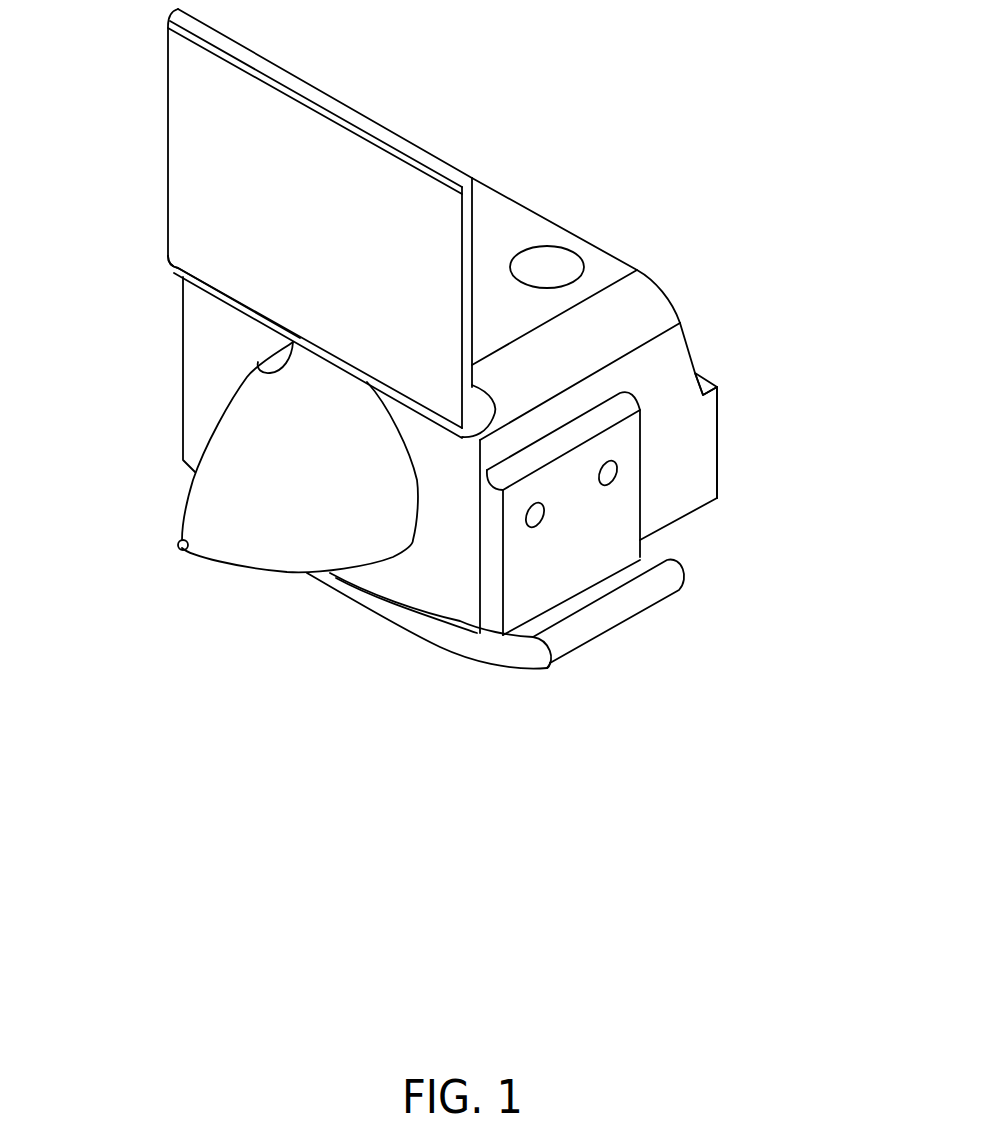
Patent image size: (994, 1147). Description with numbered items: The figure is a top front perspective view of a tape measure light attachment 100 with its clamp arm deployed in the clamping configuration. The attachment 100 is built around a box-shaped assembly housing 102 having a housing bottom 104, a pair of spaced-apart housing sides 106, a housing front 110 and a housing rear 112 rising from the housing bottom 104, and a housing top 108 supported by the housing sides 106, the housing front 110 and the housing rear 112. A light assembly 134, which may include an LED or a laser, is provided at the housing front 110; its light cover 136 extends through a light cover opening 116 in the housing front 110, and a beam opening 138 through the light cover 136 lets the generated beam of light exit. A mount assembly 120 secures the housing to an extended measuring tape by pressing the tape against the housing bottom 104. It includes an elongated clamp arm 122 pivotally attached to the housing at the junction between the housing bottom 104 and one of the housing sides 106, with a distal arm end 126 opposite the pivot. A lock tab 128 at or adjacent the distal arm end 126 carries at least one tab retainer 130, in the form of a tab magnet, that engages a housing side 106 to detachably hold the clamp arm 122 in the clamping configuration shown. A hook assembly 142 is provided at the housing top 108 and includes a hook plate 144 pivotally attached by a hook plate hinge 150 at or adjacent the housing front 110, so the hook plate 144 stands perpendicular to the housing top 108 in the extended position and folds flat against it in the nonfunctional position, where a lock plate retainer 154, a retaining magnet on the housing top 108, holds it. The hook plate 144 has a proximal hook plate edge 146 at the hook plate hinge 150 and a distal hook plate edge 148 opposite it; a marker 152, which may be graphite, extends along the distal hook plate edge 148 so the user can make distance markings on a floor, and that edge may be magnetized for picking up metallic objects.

The tape measure light attachment 100 is at (489, 64).
The assembly housing 102 is at (710, 518).
The housing bottom 104 is at (678, 525).
The housing sides 106 is at (183, 392).
The housing top 108 is at (506, 226).
The housing front 110 is at (204, 423).
The housing rear 112 is at (718, 411).
The light cover opening 116 is at (285, 368).
The mount assembly 120 is at (560, 688).
The clamp arm 122 is at (507, 660).
The distal arm end 126 is at (617, 610).
The lock tab 128 is at (490, 588).
The tab retainer 130 is at (609, 486).
The light assembly 134 is at (287, 590).
The light cover 136 is at (203, 505).
The beam opening 138 is at (180, 550).
The hook assembly 142 is at (155, 47).
The hook plate 144 is at (155, 151).
The proximal hook plate edge 146 is at (195, 284).
The distal hook plate edge 148 is at (238, 68).
The hook plate hinge 150 is at (485, 410).
The marker 152 is at (287, 88).
The lock plate retainer 154 is at (550, 265).